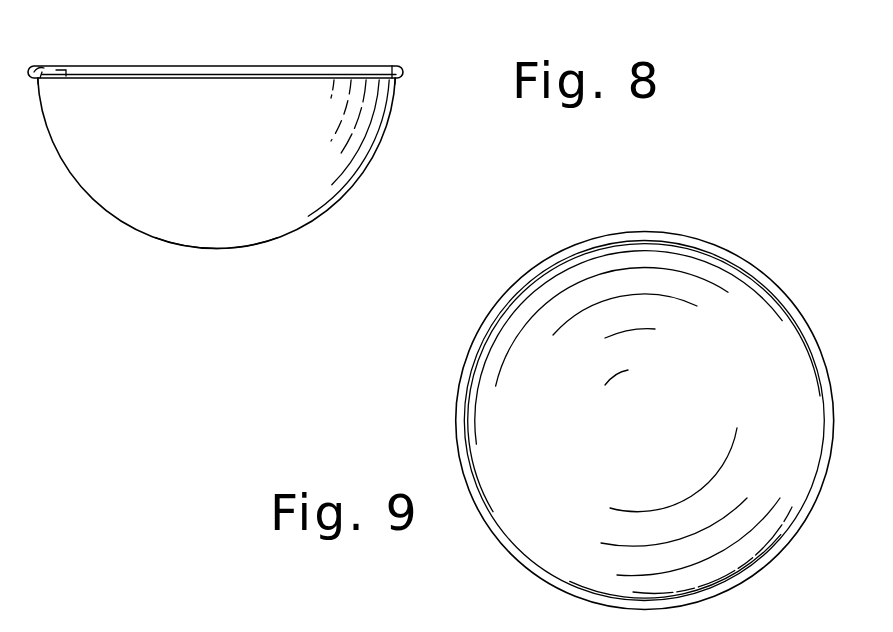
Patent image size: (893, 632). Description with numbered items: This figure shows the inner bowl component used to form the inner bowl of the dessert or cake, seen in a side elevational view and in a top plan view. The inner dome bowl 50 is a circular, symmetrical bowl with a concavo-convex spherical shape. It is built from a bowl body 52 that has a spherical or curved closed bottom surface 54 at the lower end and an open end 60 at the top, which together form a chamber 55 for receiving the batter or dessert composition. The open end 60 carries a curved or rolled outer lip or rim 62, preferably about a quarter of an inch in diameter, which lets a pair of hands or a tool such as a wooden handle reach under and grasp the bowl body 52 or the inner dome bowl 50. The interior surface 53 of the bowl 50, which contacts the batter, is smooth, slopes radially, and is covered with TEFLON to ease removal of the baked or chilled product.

In FIG. 8, the inner dome bowl 50 is at (364, 156).
In FIG. 9, the inner dome bowl 50 is at (752, 270).
In FIG. 8, the bowl body 52 is at (232, 196).
In FIG. 9, the interior surface 53 is at (778, 357).
In FIG. 8, the closed bottom surface 54 is at (127, 224).
In FIG. 9, the chamber 55 is at (617, 444).
In FIG. 8, the open end 60 is at (326, 66).
In FIG. 8, the outer lip 62 is at (404, 72).
In FIG. 9, the outer lip 62 is at (790, 538).